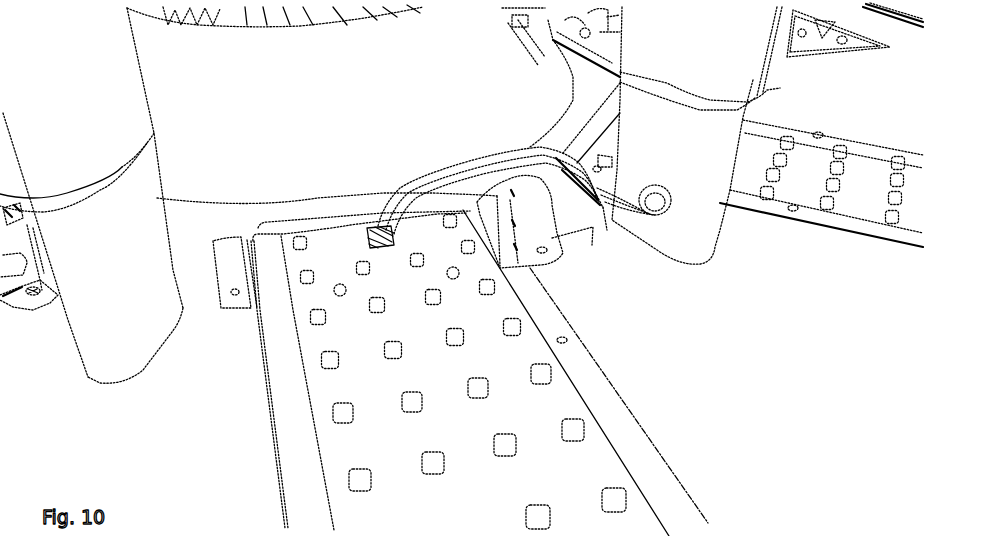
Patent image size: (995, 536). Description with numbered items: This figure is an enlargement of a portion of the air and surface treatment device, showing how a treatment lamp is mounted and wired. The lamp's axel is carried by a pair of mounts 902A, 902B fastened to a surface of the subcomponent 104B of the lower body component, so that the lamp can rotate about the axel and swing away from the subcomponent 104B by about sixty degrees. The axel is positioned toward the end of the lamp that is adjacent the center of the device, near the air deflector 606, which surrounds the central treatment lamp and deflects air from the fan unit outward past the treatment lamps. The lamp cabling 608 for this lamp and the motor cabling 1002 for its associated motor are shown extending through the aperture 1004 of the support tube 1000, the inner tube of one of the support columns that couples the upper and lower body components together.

The air deflector 606 is at (313, 128).
The cable 608 is at (428, 172).
The support tube 1000 is at (694, 149).
The motor cabling 1002 is at (598, 175).
The aperture 1004 is at (657, 220).
The mount 902A is at (230, 305).
The mount 902B is at (558, 260).
The subcomponent 104B is at (779, 388).